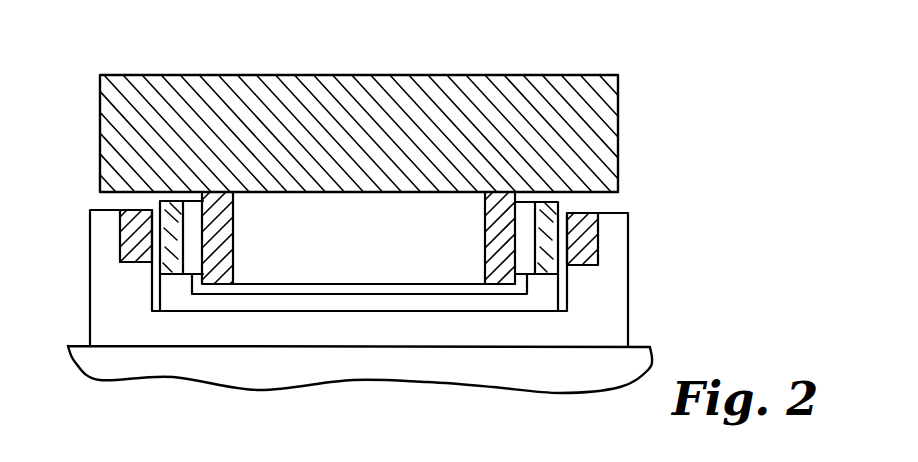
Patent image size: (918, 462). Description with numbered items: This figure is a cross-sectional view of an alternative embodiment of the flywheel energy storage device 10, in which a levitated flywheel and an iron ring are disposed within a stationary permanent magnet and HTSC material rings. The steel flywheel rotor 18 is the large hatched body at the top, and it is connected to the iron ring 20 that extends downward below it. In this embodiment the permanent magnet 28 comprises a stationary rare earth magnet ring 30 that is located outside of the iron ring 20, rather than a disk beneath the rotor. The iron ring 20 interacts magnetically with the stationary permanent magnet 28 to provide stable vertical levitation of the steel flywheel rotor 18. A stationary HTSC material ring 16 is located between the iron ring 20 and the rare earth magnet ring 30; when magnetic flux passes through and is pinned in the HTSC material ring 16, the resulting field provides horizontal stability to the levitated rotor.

The flywheel energy storage device 10 is at (644, 88).
The HTSC material ring 16 is at (543, 226).
The steel flywheel rotor 18 is at (308, 174).
The iron ring 20 is at (224, 240).
The permanent magnet 28 is at (487, 223).
The rare earth magnet ring 30 is at (128, 233).